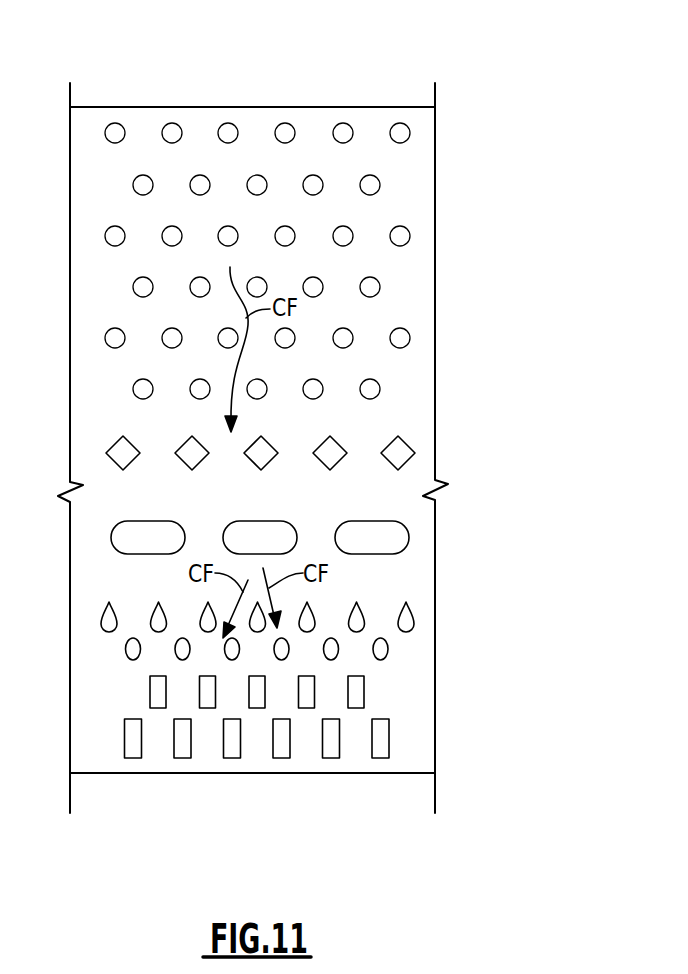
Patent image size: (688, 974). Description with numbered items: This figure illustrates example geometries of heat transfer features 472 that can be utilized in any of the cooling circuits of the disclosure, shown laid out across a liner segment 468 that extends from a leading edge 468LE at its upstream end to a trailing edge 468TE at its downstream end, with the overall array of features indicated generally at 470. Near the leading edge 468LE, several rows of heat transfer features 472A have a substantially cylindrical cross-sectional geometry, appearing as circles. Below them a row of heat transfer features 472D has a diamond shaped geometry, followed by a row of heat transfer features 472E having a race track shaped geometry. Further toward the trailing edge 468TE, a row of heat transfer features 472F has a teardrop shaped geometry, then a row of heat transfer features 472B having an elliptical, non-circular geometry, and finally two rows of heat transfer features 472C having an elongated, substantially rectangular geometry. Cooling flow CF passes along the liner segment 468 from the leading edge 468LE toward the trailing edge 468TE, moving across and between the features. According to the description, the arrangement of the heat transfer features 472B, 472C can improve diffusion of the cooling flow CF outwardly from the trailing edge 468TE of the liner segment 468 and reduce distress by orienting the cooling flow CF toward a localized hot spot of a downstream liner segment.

The liner segment 468 is at (246, 426).
The leading edge of plate 468LE is at (312, 107).
The trailing edge 468TE is at (249, 773).
The cooling holes 470 is at (349, 406).
The heat transfer features 472 is at (351, 261).
The heat transfer features 472A is at (380, 185).
The heat transfer features 472B is at (339, 652).
The heat transfer features 472C is at (358, 697).
The heat transfer features 472D is at (338, 444).
The heat transfer features 472E is at (380, 521).
The heat transfer features 472F is at (363, 613).